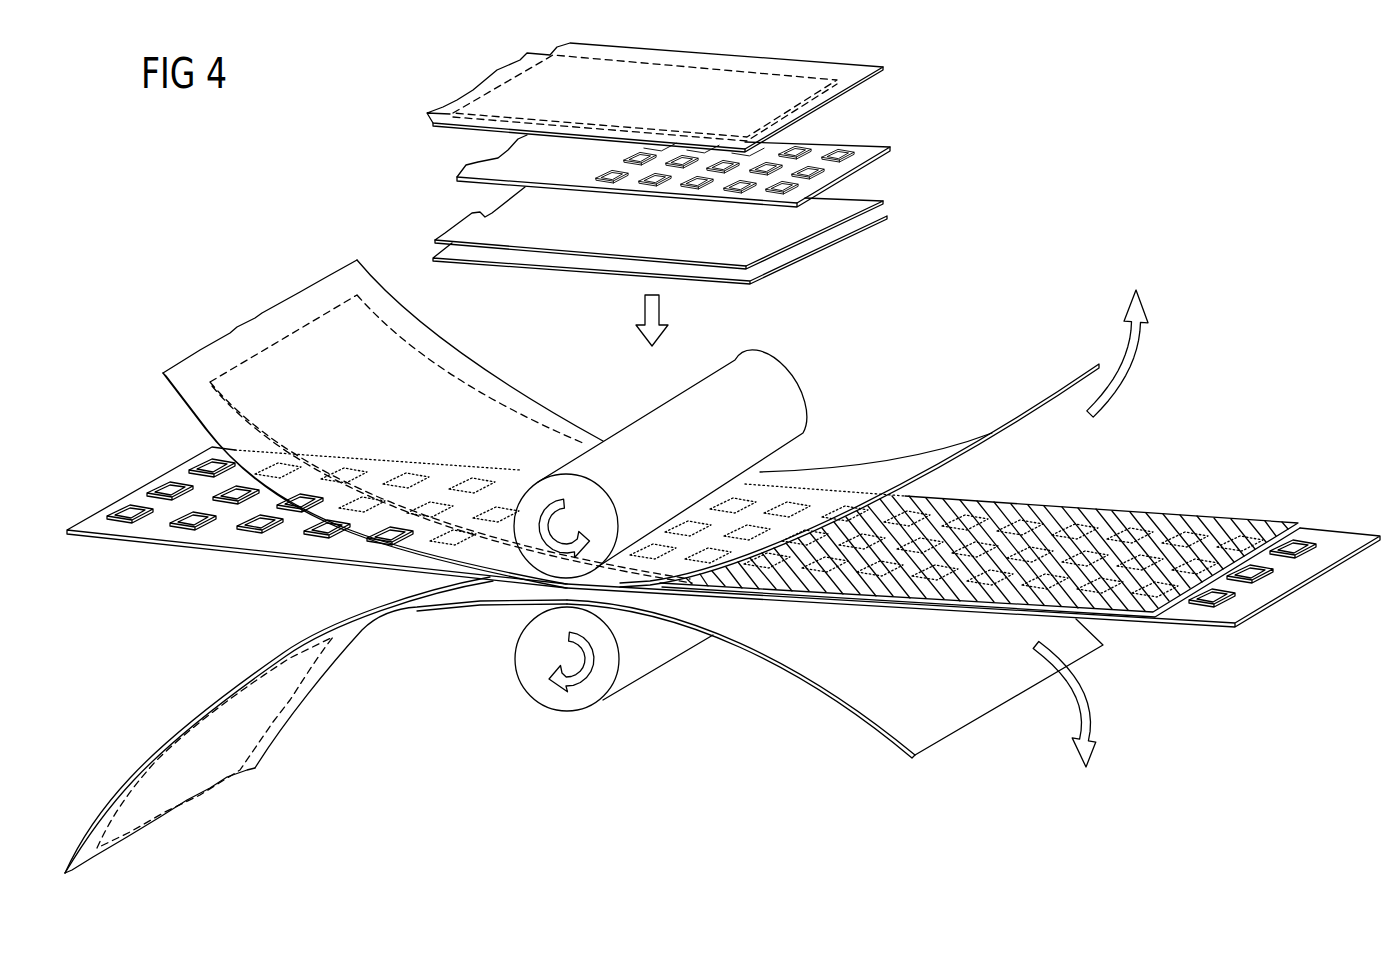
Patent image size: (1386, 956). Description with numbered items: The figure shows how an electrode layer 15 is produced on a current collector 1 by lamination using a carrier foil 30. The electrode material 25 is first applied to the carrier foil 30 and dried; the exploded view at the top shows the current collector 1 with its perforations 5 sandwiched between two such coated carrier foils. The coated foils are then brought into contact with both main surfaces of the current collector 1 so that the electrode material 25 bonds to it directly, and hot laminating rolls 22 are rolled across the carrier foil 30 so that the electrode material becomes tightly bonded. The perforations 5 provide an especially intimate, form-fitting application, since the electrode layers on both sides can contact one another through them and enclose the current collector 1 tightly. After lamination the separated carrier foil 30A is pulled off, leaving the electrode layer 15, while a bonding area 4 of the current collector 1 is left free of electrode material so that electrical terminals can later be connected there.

The current collector 1 is at (875, 148).
The bonding area 4 is at (1332, 543).
The perforations 5 is at (840, 155).
The electrode layer 15 is at (1143, 520).
The hot laminating rolls 22 is at (632, 437).
The electrode material 25 is at (457, 102).
The carrier foil 30 is at (855, 73).
The separated carrier foil 30A is at (942, 452).